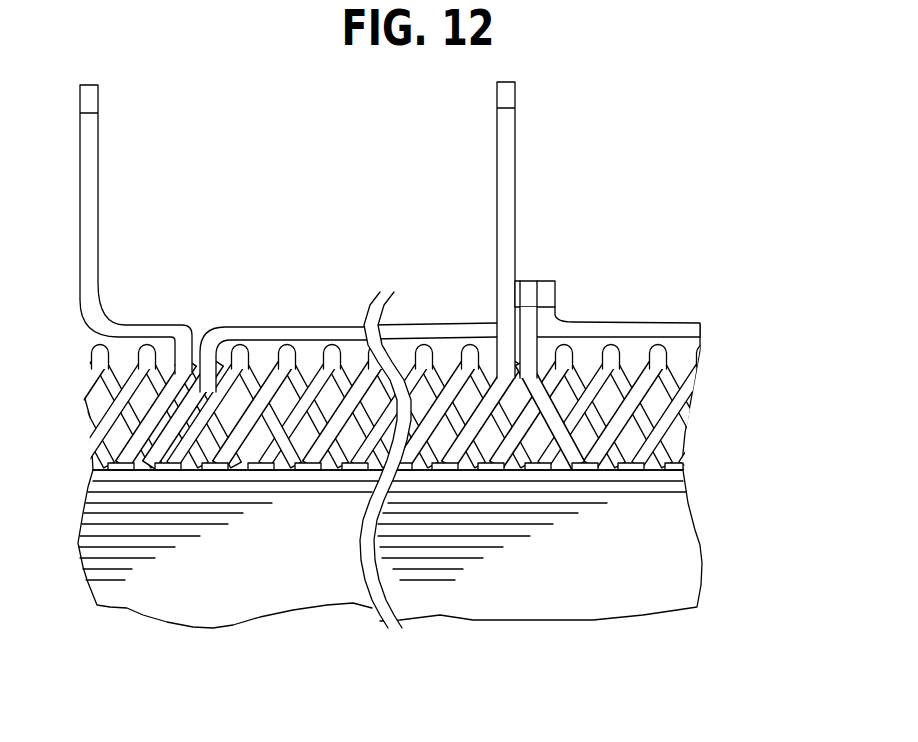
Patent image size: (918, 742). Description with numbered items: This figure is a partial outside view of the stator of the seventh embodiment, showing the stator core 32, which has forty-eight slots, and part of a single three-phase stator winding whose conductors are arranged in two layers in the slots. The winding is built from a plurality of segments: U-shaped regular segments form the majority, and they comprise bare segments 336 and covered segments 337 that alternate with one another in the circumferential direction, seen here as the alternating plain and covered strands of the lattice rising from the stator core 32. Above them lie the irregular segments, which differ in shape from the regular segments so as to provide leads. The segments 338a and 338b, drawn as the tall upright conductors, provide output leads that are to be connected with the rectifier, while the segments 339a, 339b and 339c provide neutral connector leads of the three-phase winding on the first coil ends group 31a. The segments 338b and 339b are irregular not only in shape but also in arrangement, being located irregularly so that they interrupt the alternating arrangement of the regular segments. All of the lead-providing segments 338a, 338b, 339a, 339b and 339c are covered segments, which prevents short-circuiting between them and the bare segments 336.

The first coil ends group 31a is at (298, 318).
The stator core 32 is at (682, 547).
The bare segments 336 is at (240, 362).
The covered segments 337 is at (290, 372).
The segment providing output lead 338a is at (182, 330).
The segment providing output lead 338b is at (512, 188).
The segment providing neutral connector lead 339a is at (413, 337).
The segment providing neutral connector lead 339b is at (533, 345).
The segment providing neutral connector lead 339c is at (627, 332).